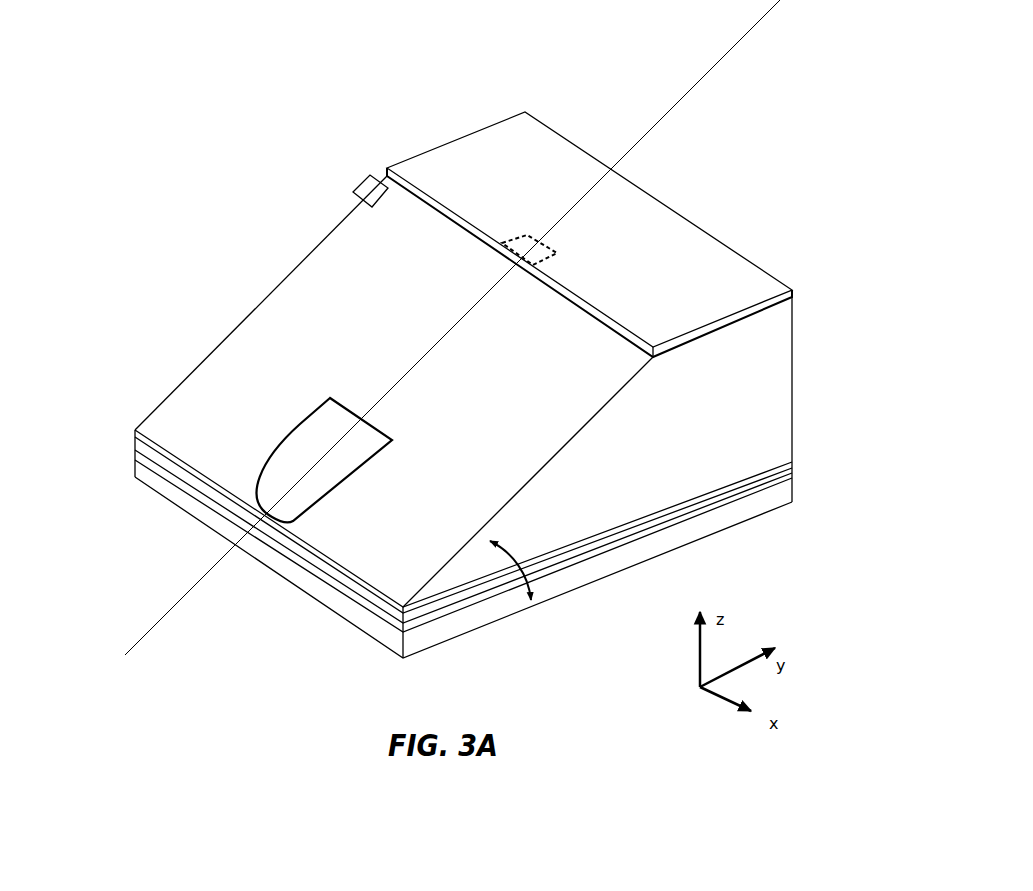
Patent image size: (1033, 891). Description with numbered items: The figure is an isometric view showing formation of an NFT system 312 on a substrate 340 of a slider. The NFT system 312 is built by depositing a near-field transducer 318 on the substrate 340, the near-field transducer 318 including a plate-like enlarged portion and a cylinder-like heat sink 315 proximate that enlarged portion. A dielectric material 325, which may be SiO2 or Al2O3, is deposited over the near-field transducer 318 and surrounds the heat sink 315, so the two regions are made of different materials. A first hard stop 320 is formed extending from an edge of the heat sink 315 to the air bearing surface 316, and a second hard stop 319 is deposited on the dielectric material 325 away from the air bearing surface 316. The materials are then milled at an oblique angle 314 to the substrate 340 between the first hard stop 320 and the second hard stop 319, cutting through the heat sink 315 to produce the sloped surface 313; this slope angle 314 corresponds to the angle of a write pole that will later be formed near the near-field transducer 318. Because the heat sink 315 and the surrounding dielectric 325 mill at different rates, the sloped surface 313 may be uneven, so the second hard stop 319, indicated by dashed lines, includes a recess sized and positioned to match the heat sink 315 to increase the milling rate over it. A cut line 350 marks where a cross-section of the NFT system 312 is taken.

The NFT system 312 is at (522, 88).
The near-field transducer 318 is at (438, 152).
The sloped surface 313 is at (355, 192).
The second hard stop 319 is at (527, 237).
The dielectric material 325 is at (288, 308).
The heat sink 315 is at (308, 415).
The first hard stop 320 is at (140, 427).
The air bearing surface 316 is at (137, 477).
The cut line 350 is at (135, 637).
The substrate 340 is at (338, 607).
The oblique angle 314 is at (519, 561).